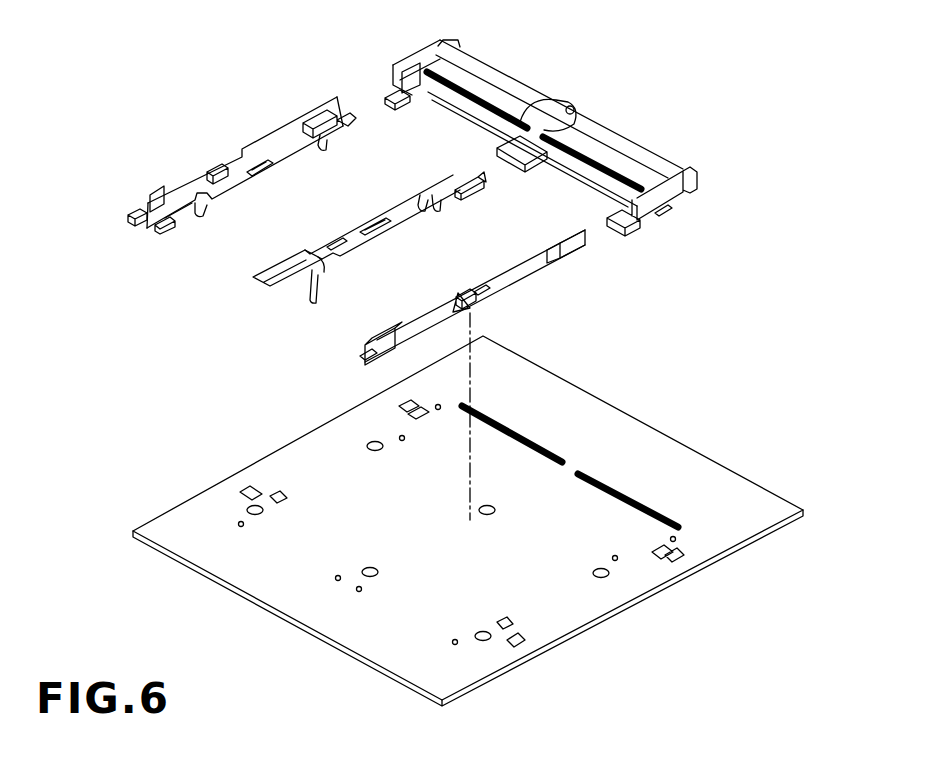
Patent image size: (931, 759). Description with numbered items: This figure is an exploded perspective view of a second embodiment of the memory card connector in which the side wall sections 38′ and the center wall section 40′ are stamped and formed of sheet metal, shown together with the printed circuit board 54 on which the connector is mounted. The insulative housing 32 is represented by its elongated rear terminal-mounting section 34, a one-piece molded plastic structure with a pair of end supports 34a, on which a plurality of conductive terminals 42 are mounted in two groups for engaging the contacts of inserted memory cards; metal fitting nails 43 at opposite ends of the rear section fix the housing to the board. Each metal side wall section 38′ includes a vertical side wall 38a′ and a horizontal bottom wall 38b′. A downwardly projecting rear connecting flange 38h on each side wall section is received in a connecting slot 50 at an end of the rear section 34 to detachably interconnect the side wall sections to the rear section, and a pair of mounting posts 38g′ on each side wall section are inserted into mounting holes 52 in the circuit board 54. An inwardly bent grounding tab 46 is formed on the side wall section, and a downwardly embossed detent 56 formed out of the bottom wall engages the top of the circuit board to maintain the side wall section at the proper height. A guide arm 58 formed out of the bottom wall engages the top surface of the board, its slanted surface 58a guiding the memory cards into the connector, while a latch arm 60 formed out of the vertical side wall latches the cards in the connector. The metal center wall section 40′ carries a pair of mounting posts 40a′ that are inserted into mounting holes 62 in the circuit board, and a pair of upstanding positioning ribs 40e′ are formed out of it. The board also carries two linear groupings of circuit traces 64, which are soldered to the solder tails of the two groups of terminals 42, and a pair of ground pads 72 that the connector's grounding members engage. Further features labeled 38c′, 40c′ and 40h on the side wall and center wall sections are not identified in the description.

The insulative housing 32 is at (581, 144).
The rear terminal-mounting section 34 is at (477, 68).
The end supports 34a is at (678, 195).
The conductive terminals 42 is at (497, 100).
The fitting nails 43 is at (670, 212).
The connecting slot 50 is at (423, 90).
The side wall section 38′ is at (338, 208).
The vertical side wall 38a′ is at (283, 133).
The horizontal bottom wall 38b′ is at (287, 150).
The latch tab 38c′ is at (167, 195).
The mounting posts 38g′ is at (320, 148).
The rear connecting flange 38h is at (347, 115).
The grounding tab 46 is at (222, 165).
The detent 56 is at (257, 173).
The guide arm 58 is at (150, 237).
The slanted surface 58a is at (170, 223).
The latch arm 60 is at (122, 217).
The center wall section 40′ is at (364, 227).
The mounting posts 40a′ is at (437, 210).
The latch tongue 40c′ is at (270, 273).
The positioning ribs 40e′ is at (332, 242).
The latch end tab 40h is at (467, 198).
The printed circuit board 54 is at (318, 603).
The mounting holes 52 is at (375, 441).
The mounting holes 62 is at (495, 510).
The circuit traces 64 is at (515, 425).
The ground pads 72 is at (285, 500).